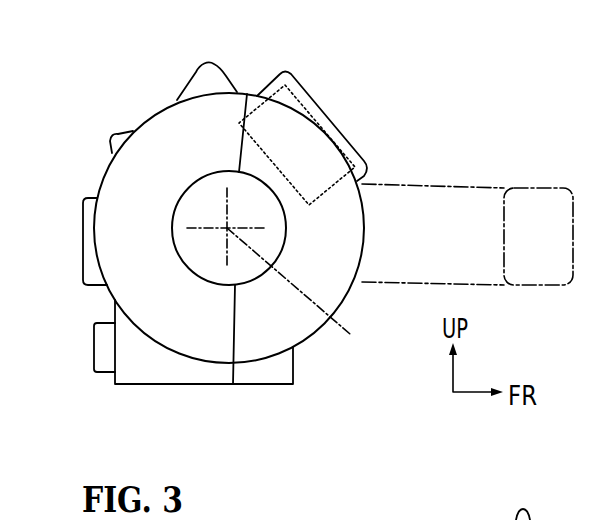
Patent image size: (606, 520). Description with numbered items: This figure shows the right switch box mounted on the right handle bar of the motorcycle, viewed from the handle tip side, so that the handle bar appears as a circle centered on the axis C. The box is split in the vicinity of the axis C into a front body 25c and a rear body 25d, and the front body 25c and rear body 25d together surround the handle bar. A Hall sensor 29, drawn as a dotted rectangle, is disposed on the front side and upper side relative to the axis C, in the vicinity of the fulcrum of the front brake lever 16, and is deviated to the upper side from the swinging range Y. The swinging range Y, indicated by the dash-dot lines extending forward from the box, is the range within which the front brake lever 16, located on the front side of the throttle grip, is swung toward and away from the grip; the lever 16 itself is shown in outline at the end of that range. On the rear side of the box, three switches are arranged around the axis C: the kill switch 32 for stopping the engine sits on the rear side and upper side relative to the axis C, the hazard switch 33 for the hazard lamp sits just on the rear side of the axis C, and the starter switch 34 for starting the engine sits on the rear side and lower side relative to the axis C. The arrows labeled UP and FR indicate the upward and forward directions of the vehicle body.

The front brake lever 16 is at (533, 197).
The front body 25c is at (177, 332).
The rear body 25d is at (288, 330).
The Hall sensor 29 is at (307, 96).
The kill switch 32 is at (198, 83).
The hazard switch 33 is at (87, 248).
The starter switch 34 is at (100, 348).
The axis C is at (296, 289).
The swinging range Y is at (438, 195).